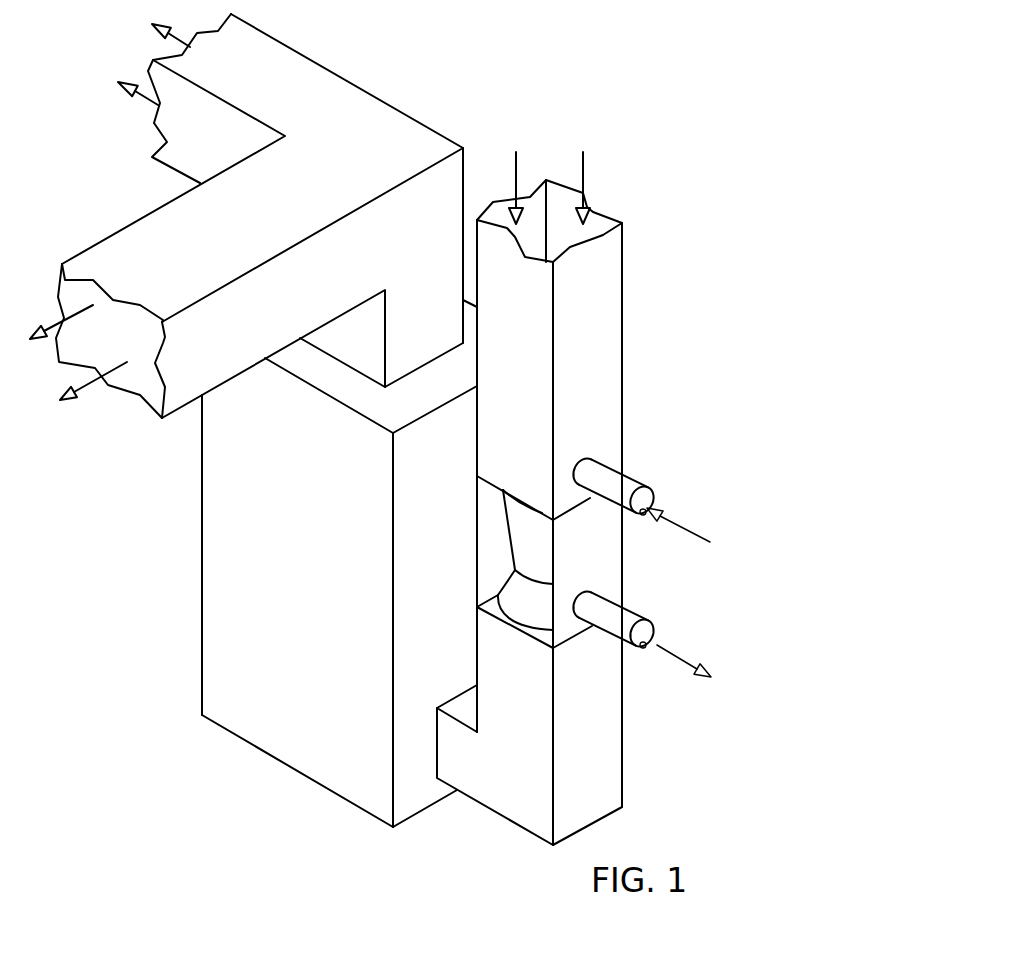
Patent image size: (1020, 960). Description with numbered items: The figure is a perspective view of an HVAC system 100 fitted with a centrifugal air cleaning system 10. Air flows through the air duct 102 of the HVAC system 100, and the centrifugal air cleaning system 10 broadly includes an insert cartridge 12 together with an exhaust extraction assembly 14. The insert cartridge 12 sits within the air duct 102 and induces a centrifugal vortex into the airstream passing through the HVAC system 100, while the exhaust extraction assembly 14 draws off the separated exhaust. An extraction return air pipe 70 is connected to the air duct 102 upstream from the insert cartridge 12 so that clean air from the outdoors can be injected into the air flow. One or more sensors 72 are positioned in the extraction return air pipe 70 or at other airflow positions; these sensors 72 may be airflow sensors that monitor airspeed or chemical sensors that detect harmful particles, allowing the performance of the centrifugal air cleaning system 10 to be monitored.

The HVAC system 100 is at (508, 92).
The air duct 102 is at (661, 290).
The centrifugal air cleaning system 10 is at (637, 556).
The insert cartridge 12 is at (648, 578).
The exhaust extraction assembly 14 is at (682, 618).
The extraction return air pipe 70 is at (653, 458).
The sensors 72 is at (643, 516).